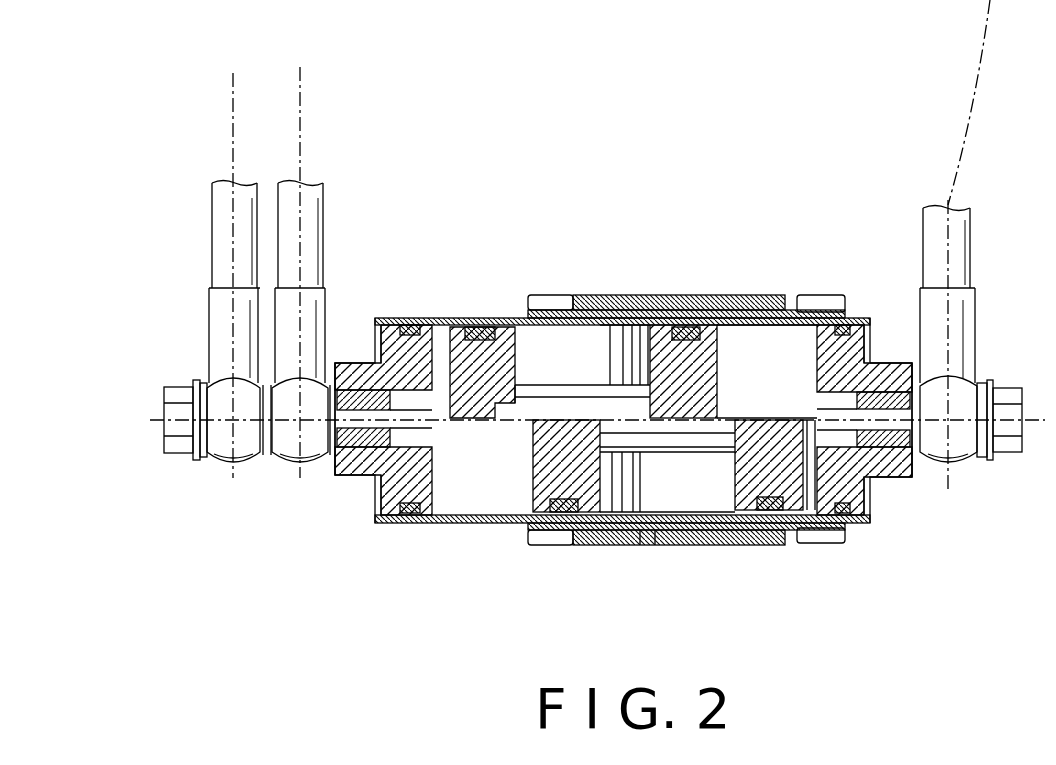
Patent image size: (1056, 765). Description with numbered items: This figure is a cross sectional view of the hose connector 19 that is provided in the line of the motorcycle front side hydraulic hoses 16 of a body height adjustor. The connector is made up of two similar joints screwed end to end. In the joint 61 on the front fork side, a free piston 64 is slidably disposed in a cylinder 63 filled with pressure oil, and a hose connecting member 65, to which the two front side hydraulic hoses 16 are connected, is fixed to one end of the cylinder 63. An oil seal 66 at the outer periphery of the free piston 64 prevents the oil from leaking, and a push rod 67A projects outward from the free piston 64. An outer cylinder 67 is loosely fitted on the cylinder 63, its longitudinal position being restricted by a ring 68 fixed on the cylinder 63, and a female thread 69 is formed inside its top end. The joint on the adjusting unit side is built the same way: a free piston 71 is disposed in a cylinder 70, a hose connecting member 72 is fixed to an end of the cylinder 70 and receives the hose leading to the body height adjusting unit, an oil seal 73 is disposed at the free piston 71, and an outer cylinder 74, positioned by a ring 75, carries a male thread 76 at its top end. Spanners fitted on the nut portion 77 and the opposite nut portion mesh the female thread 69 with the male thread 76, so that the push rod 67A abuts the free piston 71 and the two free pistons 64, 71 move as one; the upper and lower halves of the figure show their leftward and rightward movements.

The motorcycle front side hydraulic hose 16 is at (233, 85).
The hose connector 19 is at (486, 190).
The joint on the front fork side 61 is at (379, 312).
The cylinder 63 is at (420, 318).
The free piston 64 is at (515, 320).
The hose connecting member 65 is at (378, 502).
The oil seal 66 is at (483, 325).
The outer cylinder 67 is at (618, 297).
The push rod 67A is at (563, 395).
The ring 68 is at (582, 320).
The female thread 69 is at (727, 540).
The cylinder 70 is at (656, 535).
The free piston 71 is at (745, 305).
The hose connecting member 72 is at (877, 505).
The oil seal 73 is at (692, 300).
The outer cylinder 74 is at (785, 300).
The ring 75 is at (660, 318).
The male thread 76 is at (733, 318).
The nut portion 77 is at (556, 296).